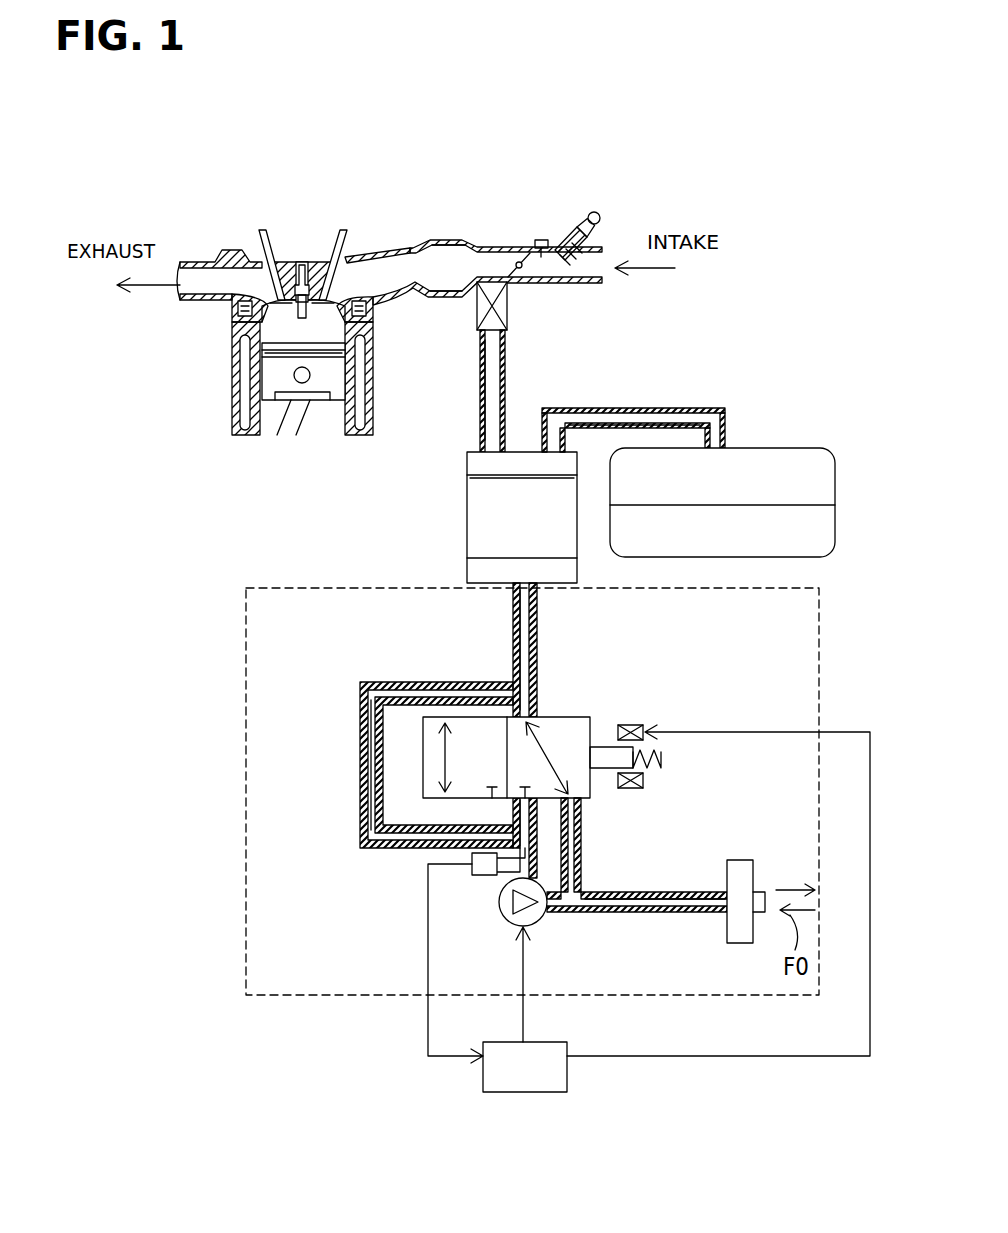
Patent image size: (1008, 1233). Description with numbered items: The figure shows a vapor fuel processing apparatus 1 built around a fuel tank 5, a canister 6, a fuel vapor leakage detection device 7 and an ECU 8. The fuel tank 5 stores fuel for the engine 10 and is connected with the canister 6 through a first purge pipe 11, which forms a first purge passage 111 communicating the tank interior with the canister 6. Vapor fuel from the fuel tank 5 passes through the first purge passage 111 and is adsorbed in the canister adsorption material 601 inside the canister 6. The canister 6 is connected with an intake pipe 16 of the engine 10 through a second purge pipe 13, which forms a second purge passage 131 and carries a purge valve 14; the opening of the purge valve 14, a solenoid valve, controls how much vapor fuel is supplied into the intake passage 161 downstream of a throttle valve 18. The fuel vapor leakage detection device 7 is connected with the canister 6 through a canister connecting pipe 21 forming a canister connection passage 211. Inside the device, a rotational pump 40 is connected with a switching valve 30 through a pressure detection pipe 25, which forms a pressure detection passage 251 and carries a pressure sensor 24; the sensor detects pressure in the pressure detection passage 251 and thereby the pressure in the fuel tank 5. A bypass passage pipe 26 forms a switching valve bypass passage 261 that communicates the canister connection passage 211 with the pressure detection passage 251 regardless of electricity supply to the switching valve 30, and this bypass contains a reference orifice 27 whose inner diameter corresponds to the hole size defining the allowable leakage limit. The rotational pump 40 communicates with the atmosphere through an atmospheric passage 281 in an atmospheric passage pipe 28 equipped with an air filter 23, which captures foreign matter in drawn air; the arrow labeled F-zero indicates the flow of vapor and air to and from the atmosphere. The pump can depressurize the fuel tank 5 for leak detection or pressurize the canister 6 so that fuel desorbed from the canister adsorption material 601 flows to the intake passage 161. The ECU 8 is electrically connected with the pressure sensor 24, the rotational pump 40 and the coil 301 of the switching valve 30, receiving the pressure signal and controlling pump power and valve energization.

The vapor fuel processing apparatus 1 is at (815, 372).
The fuel tank 5 is at (730, 448).
The canister 6 is at (467, 479).
The canister adsorption material 601 is at (495, 538).
The fuel vapor leakage detection device 7 is at (822, 640).
The ECU 8 is at (524, 1093).
The engine 10 is at (232, 412).
The first purge pipe 11 is at (636, 408).
The first purge passage 111 is at (680, 425).
The second purge pipe 13 is at (505, 398).
The second purge passage 131 is at (497, 372).
The purge valve 14 is at (508, 320).
The intake pipe 16 is at (495, 250).
The intake passage 161 is at (450, 262).
The throttle valve 18 is at (529, 250).
The canister connecting pipe 21 is at (513, 640).
The canister connection passage 211 is at (515, 606).
The air filter 23 is at (740, 862).
The pressure sensor 24 is at (478, 876).
The pressure detection pipe 25 is at (567, 822).
The pressure detection passage 251 is at (516, 812).
The bypass passage pipe 26 is at (360, 700).
The switching valve bypass passage 261 is at (375, 732).
The reference orifice 27 is at (371, 775).
The atmospheric passage pipe 28 is at (680, 913).
The atmospheric passage 281 is at (658, 895).
The switching valve 30 is at (553, 708).
The coil 301 is at (645, 780).
The rotational pump 40 is at (535, 922).